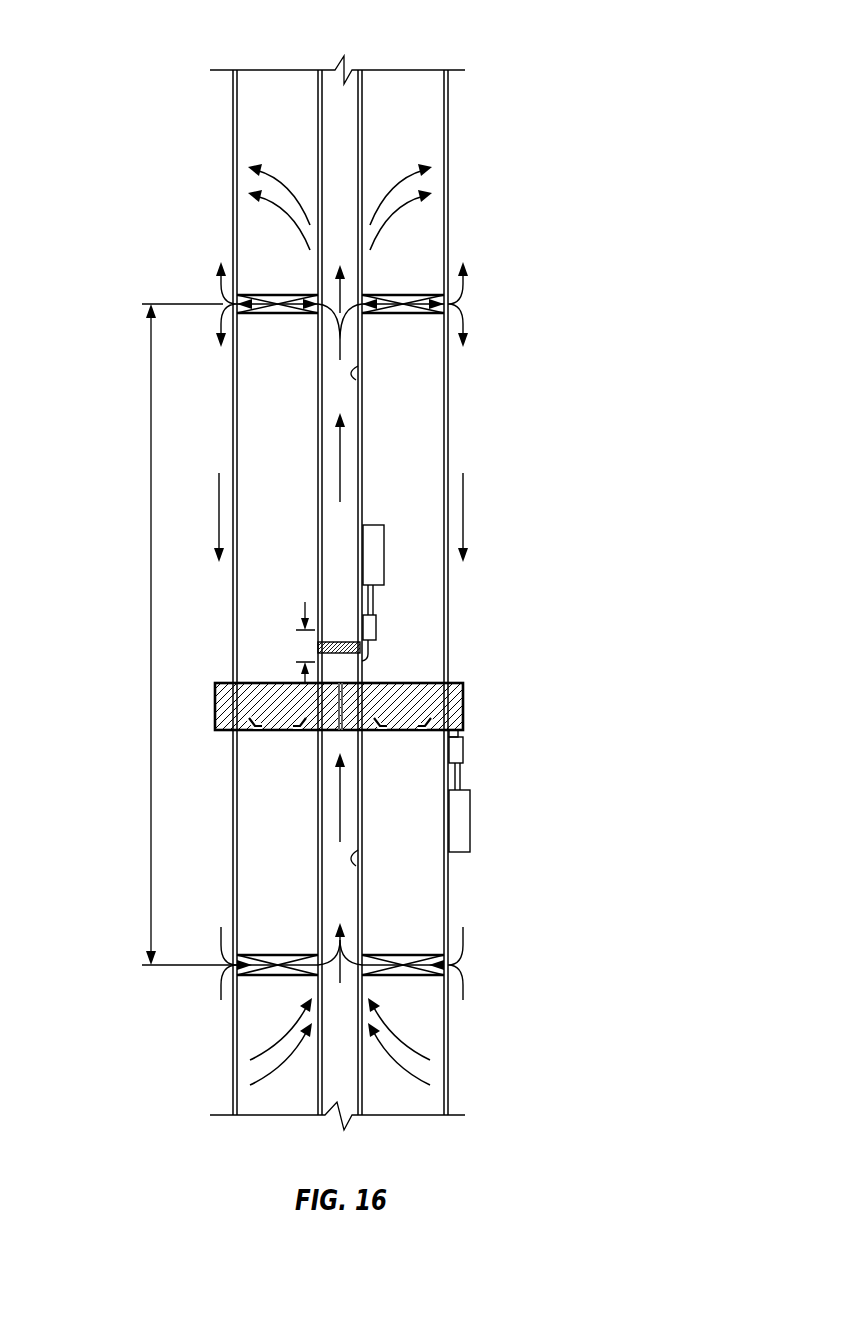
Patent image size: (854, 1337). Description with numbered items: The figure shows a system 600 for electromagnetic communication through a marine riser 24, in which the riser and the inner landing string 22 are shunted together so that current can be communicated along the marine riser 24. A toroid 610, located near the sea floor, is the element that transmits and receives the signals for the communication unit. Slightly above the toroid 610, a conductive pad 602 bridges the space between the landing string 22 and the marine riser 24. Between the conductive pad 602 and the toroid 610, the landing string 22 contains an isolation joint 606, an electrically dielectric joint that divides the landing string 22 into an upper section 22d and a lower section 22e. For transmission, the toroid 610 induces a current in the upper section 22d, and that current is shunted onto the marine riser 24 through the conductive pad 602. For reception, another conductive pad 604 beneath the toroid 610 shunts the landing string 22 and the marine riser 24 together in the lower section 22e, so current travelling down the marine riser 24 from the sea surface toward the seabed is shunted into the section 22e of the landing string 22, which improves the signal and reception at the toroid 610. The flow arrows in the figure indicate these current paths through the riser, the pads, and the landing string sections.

The system 600 is at (142, 55).
The landing string 22 is at (318, 398).
The section of landing string 22d is at (356, 380).
The section of landing string 22e is at (356, 866).
The marine riser 24 is at (233, 422).
The conductive pad 602 is at (404, 296).
The conductive pad 604 is at (410, 957).
The isolation joint 606 is at (345, 648).
The toroid 610 is at (215, 703).